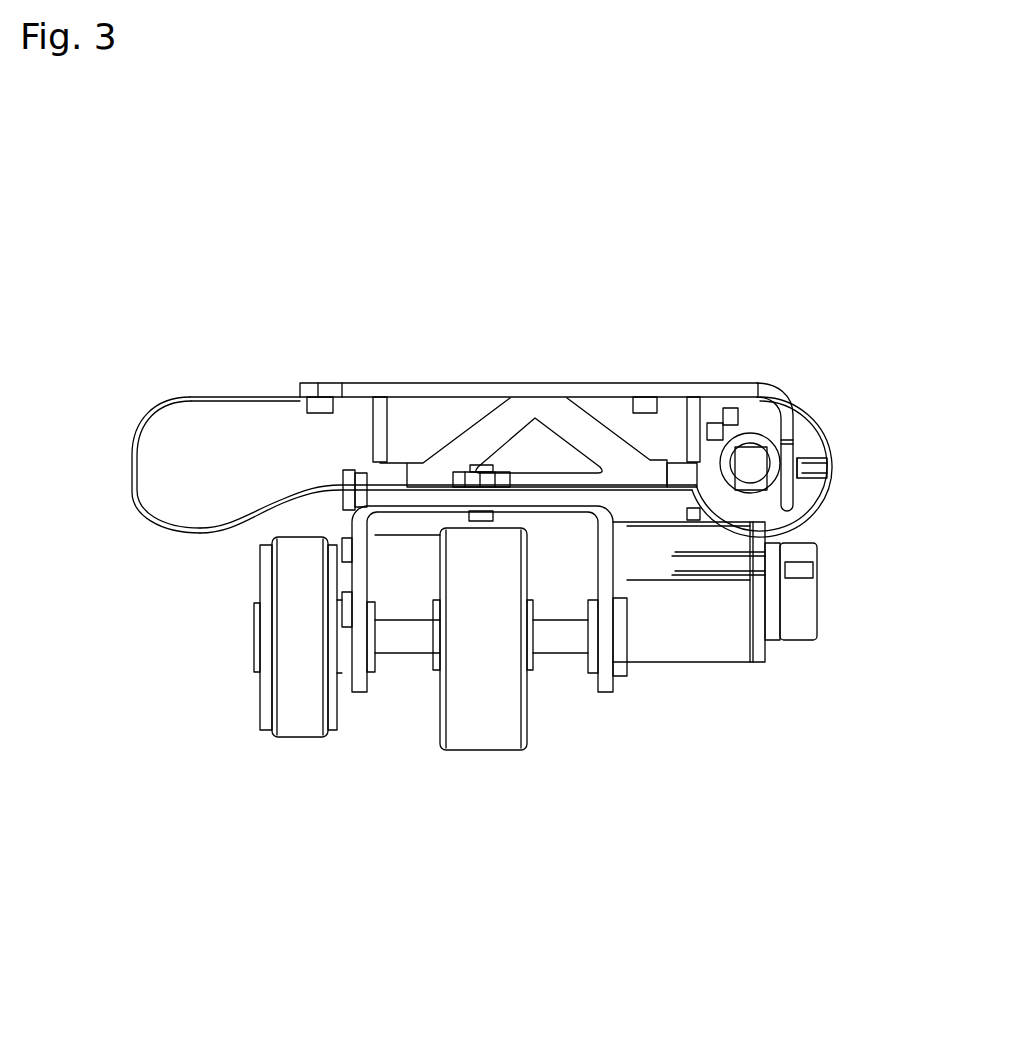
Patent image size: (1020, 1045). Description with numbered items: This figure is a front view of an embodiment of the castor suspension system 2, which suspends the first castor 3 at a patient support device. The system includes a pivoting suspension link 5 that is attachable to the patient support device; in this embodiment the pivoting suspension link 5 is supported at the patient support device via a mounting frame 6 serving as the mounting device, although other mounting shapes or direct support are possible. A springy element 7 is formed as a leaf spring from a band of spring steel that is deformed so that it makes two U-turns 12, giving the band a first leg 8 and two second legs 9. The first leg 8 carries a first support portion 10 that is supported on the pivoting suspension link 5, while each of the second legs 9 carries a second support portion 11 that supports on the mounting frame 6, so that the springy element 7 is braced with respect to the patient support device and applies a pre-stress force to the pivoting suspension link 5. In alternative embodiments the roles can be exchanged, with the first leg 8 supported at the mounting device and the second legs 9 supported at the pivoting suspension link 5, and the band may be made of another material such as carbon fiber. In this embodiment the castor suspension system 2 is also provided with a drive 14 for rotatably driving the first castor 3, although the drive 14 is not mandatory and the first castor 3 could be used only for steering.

The castor suspension system 2 is at (451, 243).
The first castor 3 is at (490, 721).
The pivoting suspension link 5 is at (358, 562).
The mounting frame 6 is at (352, 384).
The springy element 7 is at (145, 418).
The first leg 8 is at (340, 492).
The second legs 9 is at (230, 397).
The first support portion 10 is at (572, 497).
The second support portion 11 is at (321, 384).
The U-turns 12 is at (127, 472).
The drive 14 is at (673, 632).